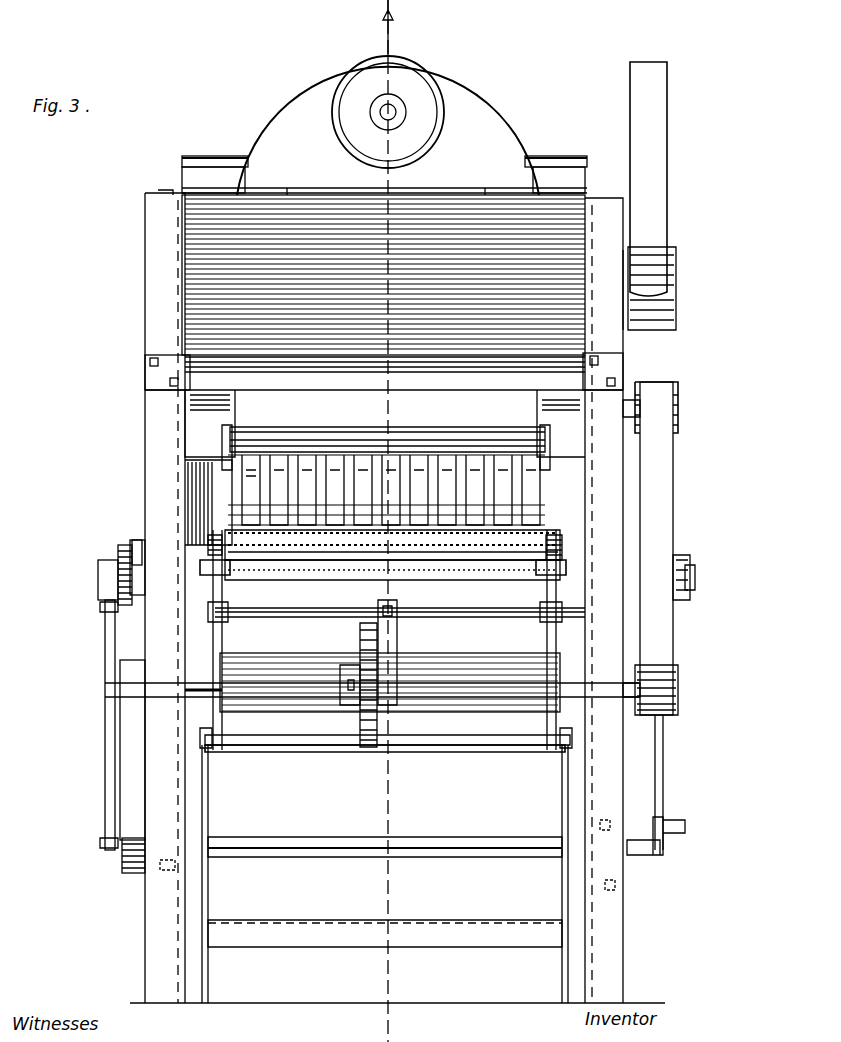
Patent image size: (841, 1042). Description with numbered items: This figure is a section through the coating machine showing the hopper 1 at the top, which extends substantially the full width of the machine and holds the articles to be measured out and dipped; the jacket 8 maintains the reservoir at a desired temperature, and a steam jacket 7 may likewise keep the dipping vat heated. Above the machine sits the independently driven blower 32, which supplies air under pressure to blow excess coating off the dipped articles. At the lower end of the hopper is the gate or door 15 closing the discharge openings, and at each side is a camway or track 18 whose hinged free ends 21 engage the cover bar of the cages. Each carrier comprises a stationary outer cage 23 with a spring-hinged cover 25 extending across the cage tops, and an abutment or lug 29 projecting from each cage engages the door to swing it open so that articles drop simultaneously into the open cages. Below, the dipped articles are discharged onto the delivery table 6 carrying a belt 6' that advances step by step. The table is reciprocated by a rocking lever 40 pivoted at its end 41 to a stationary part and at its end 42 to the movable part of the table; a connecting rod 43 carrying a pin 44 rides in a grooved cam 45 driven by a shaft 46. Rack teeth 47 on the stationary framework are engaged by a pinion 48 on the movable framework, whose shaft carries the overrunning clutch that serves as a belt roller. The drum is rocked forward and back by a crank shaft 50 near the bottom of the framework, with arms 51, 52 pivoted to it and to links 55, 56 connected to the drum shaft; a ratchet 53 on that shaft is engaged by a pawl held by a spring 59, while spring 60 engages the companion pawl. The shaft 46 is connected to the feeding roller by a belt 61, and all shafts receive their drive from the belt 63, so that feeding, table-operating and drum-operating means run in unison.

The hopper 1 is at (455, 210).
The delivery table 6 is at (392, 573).
The belt 6' is at (392, 556).
The steam jacket 7 is at (455, 708).
The jacket 8 is at (546, 172).
The gate or door 15 is at (262, 425).
The camway or track 18 is at (578, 436).
The free ends of the guides 21 is at (228, 458).
The stationary outer cage 23 is at (545, 512).
The cover 25 is at (525, 508).
The abutment or lug 29 is at (550, 452).
The blower 32 is at (475, 92).
The rocking lever 40 is at (248, 630).
The pivot end of rocking lever 41 is at (230, 738).
The pivot end of rocking lever 42 is at (320, 614).
The connecting rod 43 is at (384, 642).
The pin 44 is at (338, 683).
The grooved cam 45 is at (360, 646).
The shaft 46 is at (438, 682).
The rack teeth 47 is at (205, 566).
The pinion 48 is at (222, 540).
The crank shaft 50 is at (340, 836).
The arm 51 is at (105, 698).
The arm 52 is at (665, 754).
The ratchet 53 is at (125, 548).
The link 55 is at (104, 583).
The link 56 is at (682, 578).
The spring 59 is at (150, 542).
The spring 60 is at (120, 790).
The belt 61 is at (668, 487).
The belt 63 is at (660, 146).